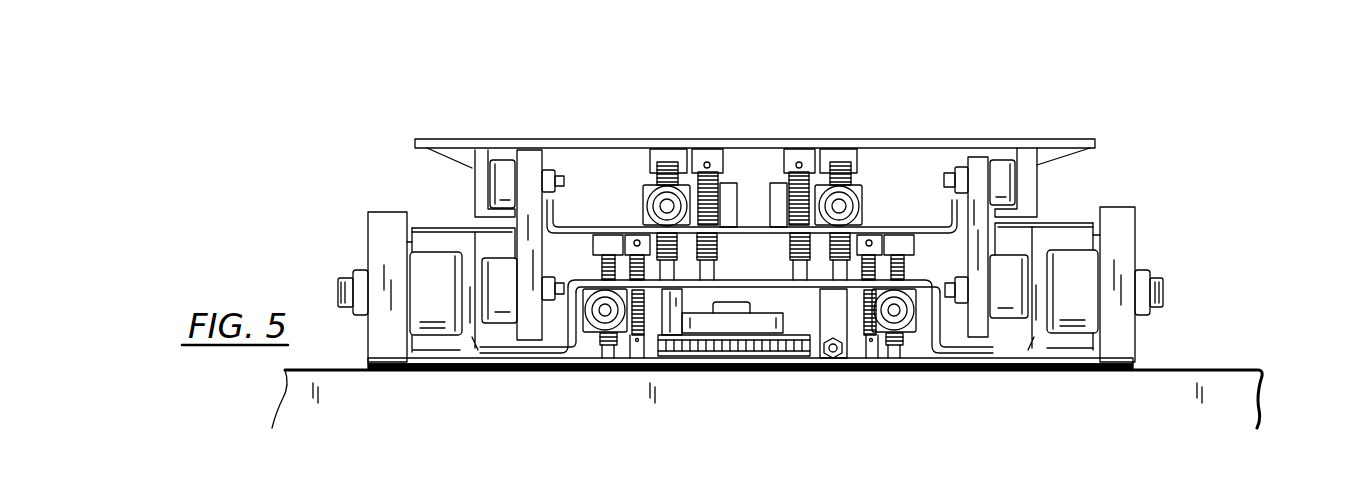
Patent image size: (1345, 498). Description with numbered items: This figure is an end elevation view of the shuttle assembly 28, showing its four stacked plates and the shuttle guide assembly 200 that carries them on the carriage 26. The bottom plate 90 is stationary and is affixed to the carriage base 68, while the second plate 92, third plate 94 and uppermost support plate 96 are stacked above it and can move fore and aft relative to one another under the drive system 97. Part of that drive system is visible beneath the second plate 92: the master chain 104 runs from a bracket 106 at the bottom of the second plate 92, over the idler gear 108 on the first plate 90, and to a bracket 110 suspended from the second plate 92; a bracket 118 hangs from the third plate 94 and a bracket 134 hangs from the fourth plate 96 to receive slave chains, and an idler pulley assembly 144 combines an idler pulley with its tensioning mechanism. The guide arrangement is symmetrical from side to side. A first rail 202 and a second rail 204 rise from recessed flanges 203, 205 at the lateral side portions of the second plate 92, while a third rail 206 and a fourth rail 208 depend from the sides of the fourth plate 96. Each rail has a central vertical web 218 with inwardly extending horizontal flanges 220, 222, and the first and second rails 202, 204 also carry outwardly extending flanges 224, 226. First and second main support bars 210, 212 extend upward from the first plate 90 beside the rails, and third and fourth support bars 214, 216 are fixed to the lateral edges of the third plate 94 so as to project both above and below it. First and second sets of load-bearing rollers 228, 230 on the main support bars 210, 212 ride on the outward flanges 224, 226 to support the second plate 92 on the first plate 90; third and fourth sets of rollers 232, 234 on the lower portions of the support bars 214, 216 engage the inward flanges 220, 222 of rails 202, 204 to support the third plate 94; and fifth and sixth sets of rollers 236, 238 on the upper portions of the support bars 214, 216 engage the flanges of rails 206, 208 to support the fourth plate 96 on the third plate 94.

The carriage 26 is at (1250, 386).
The shuttle assembly 28 is at (1122, 97).
The carriage base 68 is at (1243, 407).
The bottom plate 90 is at (1128, 367).
The second plate 92 is at (762, 258).
The third plate 94 is at (560, 226).
The uppermost support plate 96 is at (758, 138).
The drive system 97 is at (800, 360).
The chain 104 is at (775, 340).
The bracket 106 is at (836, 357).
The idler gear 108 is at (735, 325).
The bracket 110 is at (675, 327).
The bracket 118 is at (615, 236).
The bracket 134 is at (668, 152).
The idler pulley assembly 144 is at (641, 185).
The shuttle guide assembly 200 is at (404, 333).
The first rail 202 is at (475, 346).
The recessed flange 203 is at (533, 352).
The second rail 204 is at (1046, 345).
The recessed flange 205 is at (1012, 348).
The third rail 206 is at (486, 153).
The fourth rail 208 is at (1018, 150).
The first main support bar 210 is at (368, 214).
The second main support bar 212 is at (1138, 213).
The third support bar 214 is at (528, 160).
The fourth support bar 216 is at (977, 160).
The central vertical web 218 is at (470, 165).
The inwardly extending horizontal flange 220 is at (501, 156).
The inwardly extending horizontal flange 222 is at (481, 210).
The outwardly extending horizontal flange 224 is at (420, 242).
The outwardly extending horizontal flange 226 is at (420, 352).
The first set of load-bearing rollers 228 is at (416, 283).
The second set of load-bearing rollers 230 is at (1058, 276).
The third set of load-bearing rollers 232 is at (505, 277).
The fourth set of load-bearing rollers 234 is at (1005, 272).
The fifth set of load-bearing rollers 236 is at (515, 178).
The sixth set of load-bearing rollers 238 is at (1042, 175).